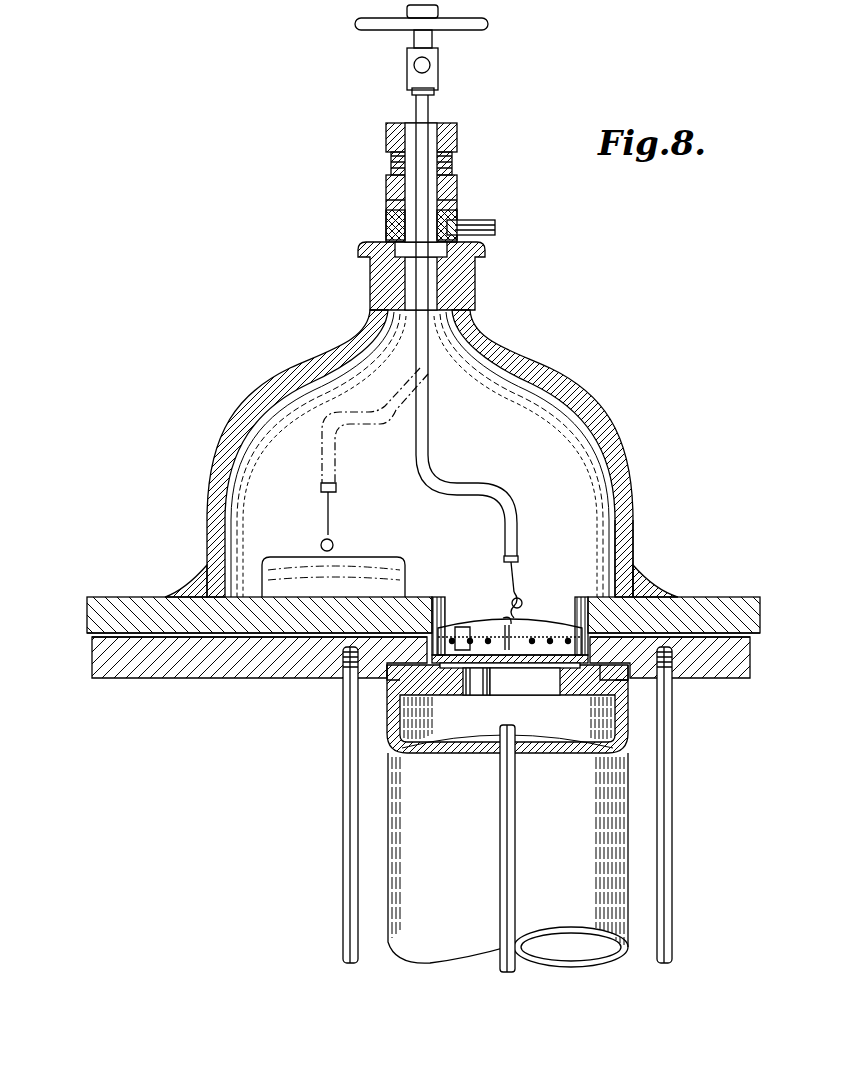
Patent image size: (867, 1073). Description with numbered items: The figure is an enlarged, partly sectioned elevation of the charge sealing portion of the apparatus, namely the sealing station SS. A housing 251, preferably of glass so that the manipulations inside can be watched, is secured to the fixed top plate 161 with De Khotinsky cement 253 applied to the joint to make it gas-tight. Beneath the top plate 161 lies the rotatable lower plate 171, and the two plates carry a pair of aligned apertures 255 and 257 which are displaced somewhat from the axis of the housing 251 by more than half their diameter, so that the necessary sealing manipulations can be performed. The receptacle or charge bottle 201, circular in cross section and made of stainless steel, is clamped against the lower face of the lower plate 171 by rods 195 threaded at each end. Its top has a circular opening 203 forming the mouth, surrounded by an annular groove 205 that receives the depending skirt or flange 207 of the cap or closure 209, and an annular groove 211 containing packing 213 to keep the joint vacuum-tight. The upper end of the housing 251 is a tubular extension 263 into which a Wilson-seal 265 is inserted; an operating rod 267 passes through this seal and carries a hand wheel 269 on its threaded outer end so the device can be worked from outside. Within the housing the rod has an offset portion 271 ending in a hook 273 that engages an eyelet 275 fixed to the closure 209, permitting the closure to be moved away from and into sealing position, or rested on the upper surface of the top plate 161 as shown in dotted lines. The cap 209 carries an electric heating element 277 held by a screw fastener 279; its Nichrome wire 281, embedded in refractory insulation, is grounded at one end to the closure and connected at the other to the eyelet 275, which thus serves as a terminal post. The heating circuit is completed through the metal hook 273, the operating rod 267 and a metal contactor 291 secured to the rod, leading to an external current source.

The fixed top plate 161 is at (127, 597).
The lower plate 171 is at (127, 678).
The rods 195 is at (343, 807).
The receptacle or charge bottle 201 is at (390, 906).
The circular opening (mouth) 203 is at (528, 700).
The annular groove 205 is at (447, 690).
The depending skirt or flange 207 is at (548, 686).
The cap or closure 209 is at (358, 572).
The annular groove 211 is at (632, 700).
The packing 213 is at (395, 672).
The housing 251 is at (255, 383).
The De Khotinsky cement 253 is at (655, 580).
The aperture 255 is at (628, 530).
The aperture 257 is at (593, 587).
The tubular extension 263 is at (372, 287).
The Wilson-seal 265 is at (388, 200).
The operating rod 267 is at (430, 375).
The hand wheel 269 is at (358, 30).
The offset portion 271 is at (478, 485).
The hook 273 is at (515, 585).
The eyelet 275 is at (538, 598).
The electric heating element 277 is at (450, 627).
The screw fastener 279 is at (495, 597).
The Nichrome wire 281 is at (462, 598).
The metal contactor 291 is at (438, 72).
The sealing station SS is at (443, 360).